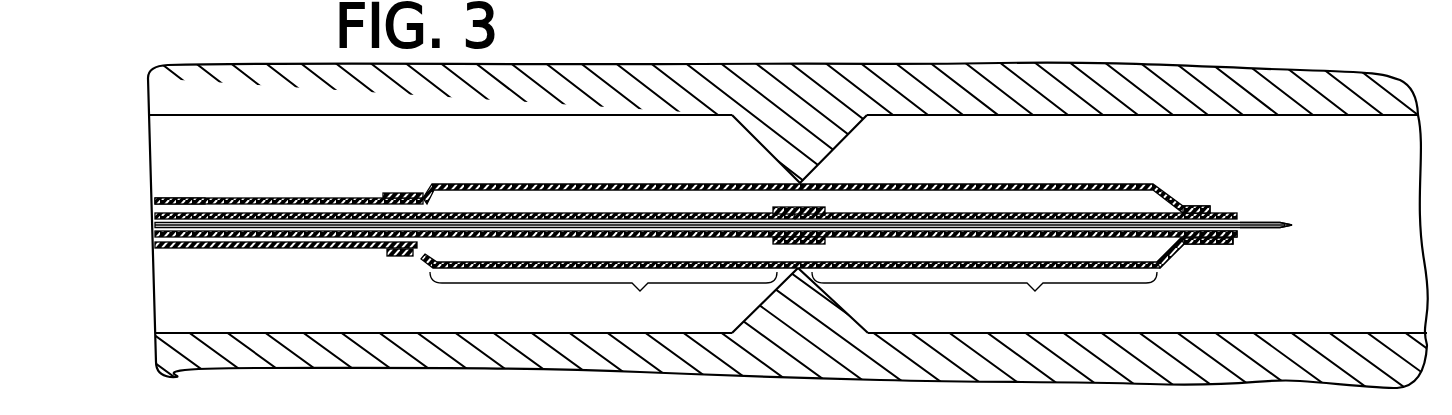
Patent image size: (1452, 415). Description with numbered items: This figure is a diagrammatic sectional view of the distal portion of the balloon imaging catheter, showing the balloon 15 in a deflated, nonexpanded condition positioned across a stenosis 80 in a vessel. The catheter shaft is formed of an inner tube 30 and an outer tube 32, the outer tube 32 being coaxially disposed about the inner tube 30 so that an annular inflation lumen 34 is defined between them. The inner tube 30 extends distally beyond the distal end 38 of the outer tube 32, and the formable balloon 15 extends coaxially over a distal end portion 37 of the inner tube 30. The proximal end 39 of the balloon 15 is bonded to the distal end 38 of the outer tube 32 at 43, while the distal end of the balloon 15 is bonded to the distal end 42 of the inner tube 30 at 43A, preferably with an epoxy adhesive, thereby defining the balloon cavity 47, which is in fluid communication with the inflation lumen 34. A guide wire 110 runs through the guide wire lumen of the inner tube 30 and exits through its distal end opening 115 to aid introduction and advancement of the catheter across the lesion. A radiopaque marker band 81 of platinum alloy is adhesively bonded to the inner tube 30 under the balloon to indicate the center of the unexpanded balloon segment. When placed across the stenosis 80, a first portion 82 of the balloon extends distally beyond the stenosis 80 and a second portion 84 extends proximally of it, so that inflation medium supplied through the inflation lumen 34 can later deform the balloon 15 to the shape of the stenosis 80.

The balloon 15 is at (1170, 264).
The inner tube 30 is at (156, 224).
The outer tube 32 is at (186, 196).
The inflation lumen 34 is at (254, 211).
The distal end portion of the inner tube 37 is at (1088, 211).
The distal end of the outer tube 38 is at (396, 207).
The proximal end of the balloon 39 is at (389, 195).
The distal end of the inner tube 42 is at (1254, 235).
The bond of balloon proximal end to outer tube 43 is at (436, 201).
The bond of balloon distal end to inner tube 43A is at (1208, 239).
The balloon cavity 47 is at (1035, 150).
The stenosis 80 is at (802, 132).
The radiopaque marker band 81 is at (826, 207).
The first portion of the balloon 82 is at (984, 296).
The second portion of the balloon 84 is at (603, 296).
The guide wire 110 is at (1282, 216).
The distal end opening of the inner tube 115 is at (1240, 215).